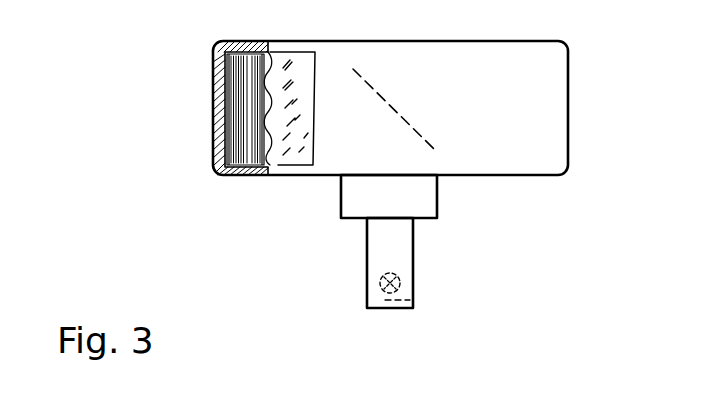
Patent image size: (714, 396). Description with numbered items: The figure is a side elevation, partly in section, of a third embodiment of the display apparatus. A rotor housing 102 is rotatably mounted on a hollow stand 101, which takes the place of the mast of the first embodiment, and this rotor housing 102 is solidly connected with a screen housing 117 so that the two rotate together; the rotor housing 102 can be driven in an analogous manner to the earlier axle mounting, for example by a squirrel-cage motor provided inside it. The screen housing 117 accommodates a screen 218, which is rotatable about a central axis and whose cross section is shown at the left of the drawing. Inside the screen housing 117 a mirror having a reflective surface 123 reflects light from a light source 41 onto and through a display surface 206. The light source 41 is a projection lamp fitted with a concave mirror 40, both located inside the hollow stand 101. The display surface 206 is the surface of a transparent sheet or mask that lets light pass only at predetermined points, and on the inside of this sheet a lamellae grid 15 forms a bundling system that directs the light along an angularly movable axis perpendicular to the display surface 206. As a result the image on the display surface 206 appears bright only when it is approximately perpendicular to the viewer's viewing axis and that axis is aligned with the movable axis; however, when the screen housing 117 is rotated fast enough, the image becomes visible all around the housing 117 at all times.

The screen housing 117 is at (569, 164).
The screen 218 is at (214, 136).
The display surface 206 is at (227, 107).
The lamellae grid 15 is at (230, 88).
The reflective surface 123 is at (407, 120).
The rotor housing 102 is at (438, 197).
The hollow stand 101 is at (414, 249).
The light source 41 is at (412, 281).
The concave mirror 40 is at (385, 300).